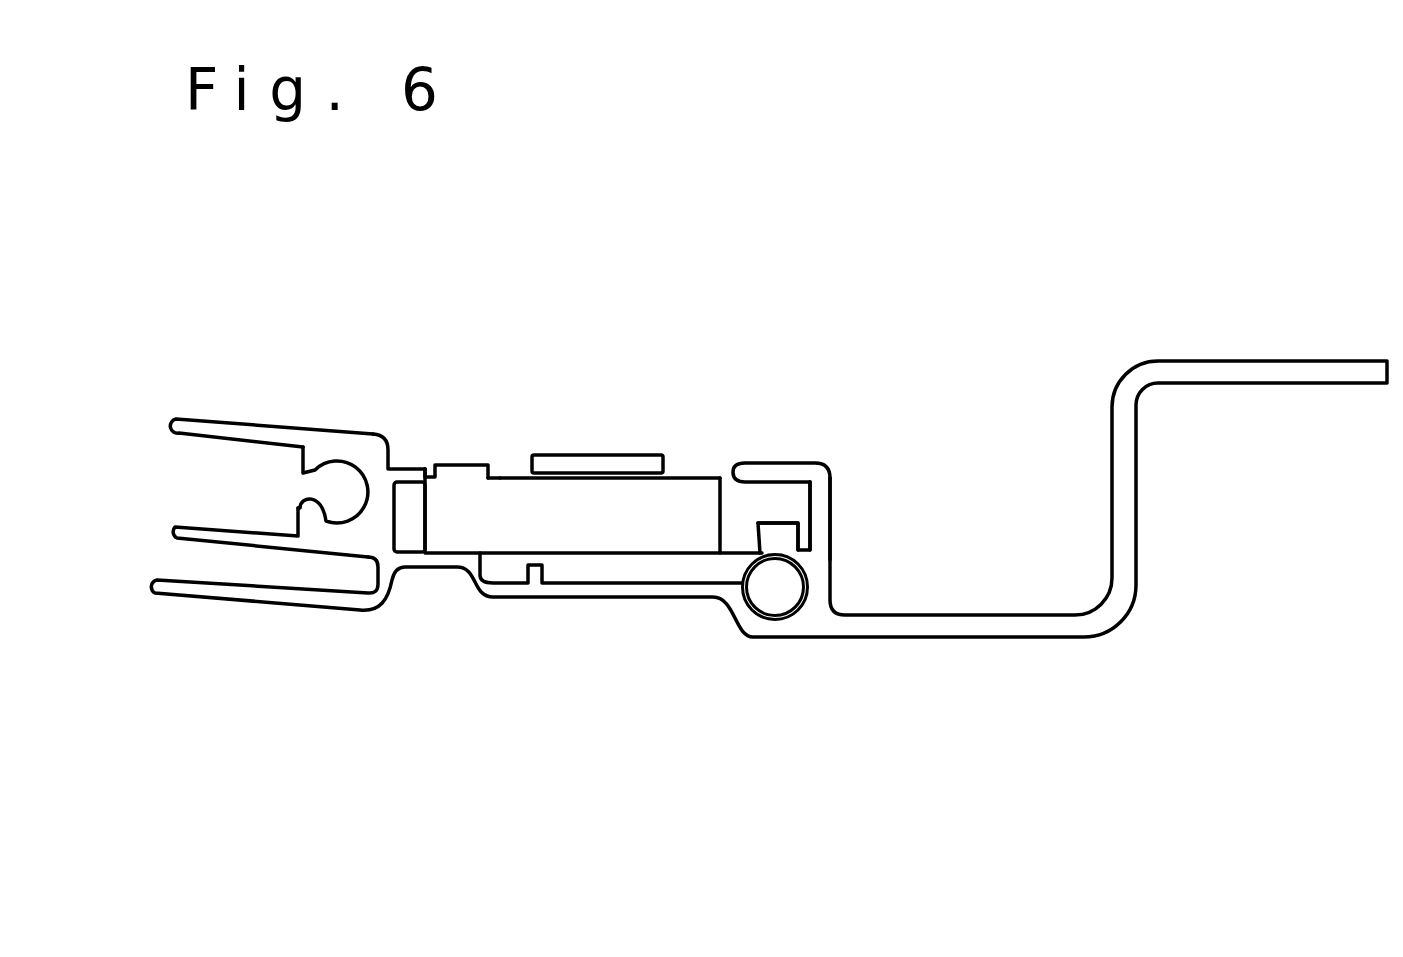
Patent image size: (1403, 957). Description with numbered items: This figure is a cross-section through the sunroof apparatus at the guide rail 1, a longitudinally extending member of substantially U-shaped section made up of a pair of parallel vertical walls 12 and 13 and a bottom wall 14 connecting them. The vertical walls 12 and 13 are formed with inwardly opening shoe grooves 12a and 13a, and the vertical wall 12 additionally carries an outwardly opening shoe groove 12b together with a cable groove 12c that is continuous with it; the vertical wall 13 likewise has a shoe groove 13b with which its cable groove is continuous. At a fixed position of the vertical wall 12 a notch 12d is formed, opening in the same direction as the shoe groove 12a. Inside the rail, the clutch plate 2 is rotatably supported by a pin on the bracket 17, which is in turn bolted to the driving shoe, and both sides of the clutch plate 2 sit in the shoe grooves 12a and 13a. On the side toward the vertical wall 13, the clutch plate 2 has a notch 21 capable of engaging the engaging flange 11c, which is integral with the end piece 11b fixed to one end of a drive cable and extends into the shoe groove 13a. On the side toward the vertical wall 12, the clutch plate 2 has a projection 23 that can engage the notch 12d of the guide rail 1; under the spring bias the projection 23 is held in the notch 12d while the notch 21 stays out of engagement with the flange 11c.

The guide rail 1 is at (181, 414).
The shoe groove 12b is at (248, 446).
The vertical wall 12 is at (334, 448).
The cable groove 12c is at (327, 520).
The shoe groove 12a is at (432, 543).
The notch 12d is at (443, 472).
The clutch plate 2 is at (508, 473).
The projection 23 is at (458, 484).
The bracket 17 is at (593, 470).
The notch 21 is at (727, 513).
The bottom wall 14 is at (575, 588).
The shoe groove 13a is at (780, 478).
The vertical wall 13 is at (823, 505).
The engaging flange 11c is at (778, 538).
The end piece 11b is at (777, 583).
The shoe groove 13b is at (790, 600).